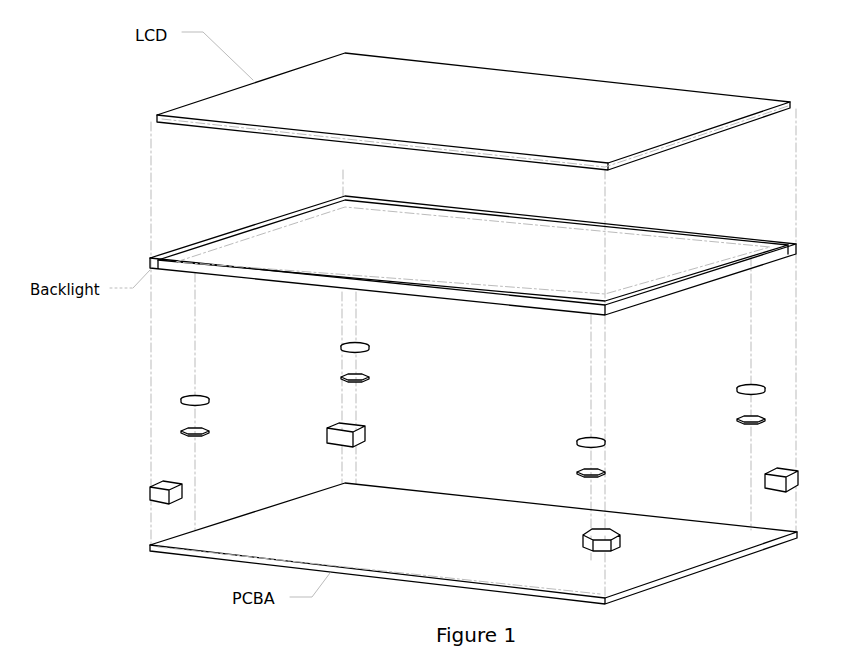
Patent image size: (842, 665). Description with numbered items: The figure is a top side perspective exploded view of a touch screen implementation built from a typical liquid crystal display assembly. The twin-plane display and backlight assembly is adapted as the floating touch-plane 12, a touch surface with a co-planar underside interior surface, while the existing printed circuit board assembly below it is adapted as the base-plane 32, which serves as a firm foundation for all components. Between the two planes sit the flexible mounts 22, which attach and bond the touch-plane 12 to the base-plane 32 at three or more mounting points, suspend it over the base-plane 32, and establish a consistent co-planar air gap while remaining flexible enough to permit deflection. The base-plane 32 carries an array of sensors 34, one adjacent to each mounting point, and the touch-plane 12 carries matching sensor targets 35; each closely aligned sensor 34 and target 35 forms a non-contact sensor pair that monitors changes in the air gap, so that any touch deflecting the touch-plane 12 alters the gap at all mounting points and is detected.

The touch-plane 12 is at (118, 115).
The flexible mounts 22 is at (150, 487).
The base-plane 32 is at (150, 545).
The sensors 34 is at (370, 378).
The sensor targets 35 is at (370, 343).